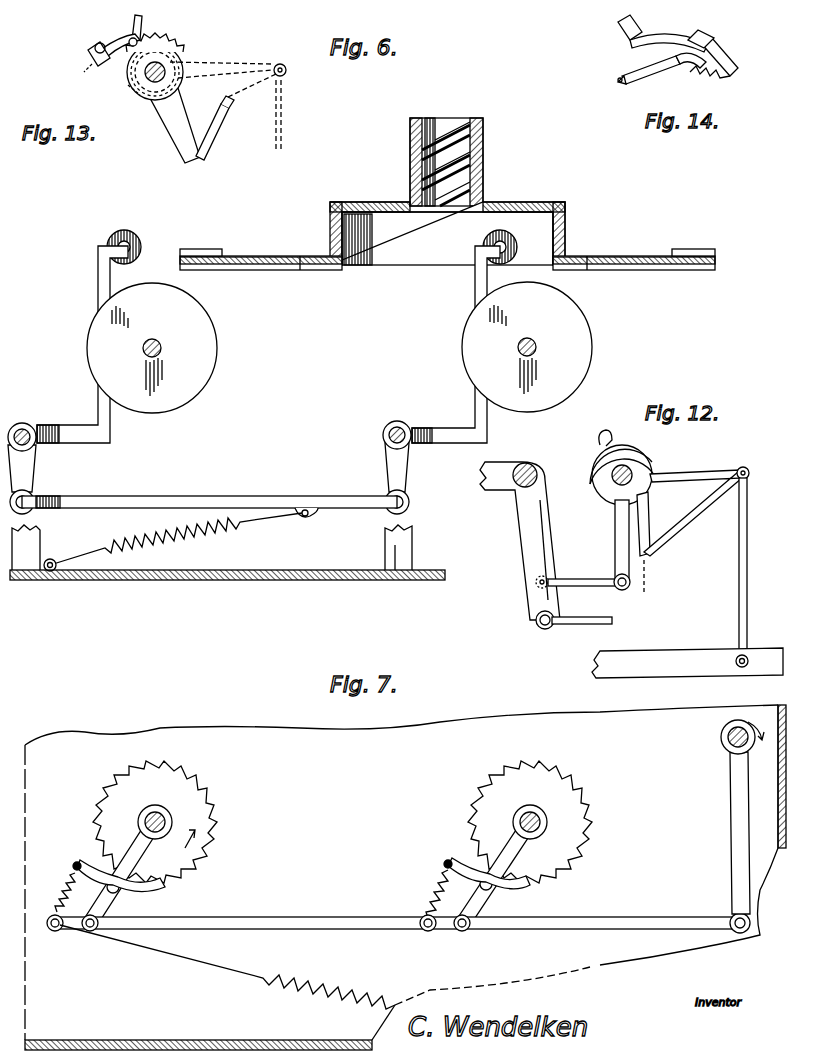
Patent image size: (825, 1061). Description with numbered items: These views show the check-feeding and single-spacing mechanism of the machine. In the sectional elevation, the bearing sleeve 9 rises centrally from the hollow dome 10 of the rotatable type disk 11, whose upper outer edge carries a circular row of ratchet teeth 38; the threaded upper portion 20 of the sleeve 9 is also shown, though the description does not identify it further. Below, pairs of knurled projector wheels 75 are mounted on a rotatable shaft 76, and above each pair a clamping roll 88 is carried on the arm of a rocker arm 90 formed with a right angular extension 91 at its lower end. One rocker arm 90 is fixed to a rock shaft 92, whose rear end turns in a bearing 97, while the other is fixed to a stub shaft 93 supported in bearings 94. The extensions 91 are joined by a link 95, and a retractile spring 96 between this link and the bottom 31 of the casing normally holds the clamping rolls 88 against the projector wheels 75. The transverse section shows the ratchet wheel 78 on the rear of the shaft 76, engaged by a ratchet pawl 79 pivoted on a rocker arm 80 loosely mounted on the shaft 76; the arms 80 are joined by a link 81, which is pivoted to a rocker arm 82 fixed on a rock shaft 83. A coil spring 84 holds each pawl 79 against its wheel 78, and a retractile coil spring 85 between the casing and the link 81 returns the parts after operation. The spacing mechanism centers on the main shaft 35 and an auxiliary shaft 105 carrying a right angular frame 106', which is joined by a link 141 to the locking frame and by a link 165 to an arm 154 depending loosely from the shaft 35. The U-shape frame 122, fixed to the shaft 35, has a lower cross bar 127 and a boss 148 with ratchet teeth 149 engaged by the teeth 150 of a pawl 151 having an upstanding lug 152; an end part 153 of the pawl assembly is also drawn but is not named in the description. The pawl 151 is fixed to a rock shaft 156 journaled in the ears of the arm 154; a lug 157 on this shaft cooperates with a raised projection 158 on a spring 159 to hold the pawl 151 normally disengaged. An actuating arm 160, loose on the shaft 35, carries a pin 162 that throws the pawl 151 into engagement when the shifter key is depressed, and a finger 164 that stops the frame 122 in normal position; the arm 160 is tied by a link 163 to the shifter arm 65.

In FIG. 6, the bearing sleeve 9 is at (484, 148).
In FIG. 6, the screw thread 20 is at (466, 120).
In FIG. 6, the hollow dome 10 is at (500, 202).
In FIG. 6, the rotatable type disk 11 is at (606, 256).
In FIG. 6, the ratchet teeth 38 is at (200, 249).
In FIG. 6, the clamping roll 88 is at (124, 232).
In FIG. 6, the rocker arm 90 is at (98, 280).
In FIG. 6, the right angular extension 91 is at (74, 443).
In FIG. 6, the projector wheels 75 is at (205, 372).
In FIG. 6, the rotatable shaft 76 is at (144, 350).
In FIG. 7, the rotatable shaft 76 is at (155, 805).
In FIG. 6, the rock shaft 92 is at (20, 425).
In FIG. 6, the stub shaft 93 is at (384, 432).
In FIG. 6, the link 95 is at (228, 496).
In FIG. 6, the retractile spring 96 is at (138, 548).
In FIG. 6, the bearing 97 is at (28, 565).
In FIG. 6, the bearings 94 is at (393, 553).
In FIG. 6, the bottom 31 is at (174, 580).
In FIG. 7, the bottom 31 is at (213, 1040).
In FIG. 7, the ratchet wheel 78 is at (210, 814).
In FIG. 7, the ratchet pawl 79 is at (106, 872).
In FIG. 7, the rocker arm 80 is at (160, 880).
In FIG. 7, the coil spring 84 is at (66, 882).
In FIG. 7, the link 81 is at (292, 917).
In FIG. 7, the rocker arm 82 is at (732, 830).
In FIG. 12, the rock shaft 83 is at (737, 674).
In FIG. 7, the rock shaft 83 is at (738, 720).
In FIG. 7, the retractile coil spring 85 is at (227, 967).
In FIG. 12, the auxiliary shaft 105 is at (525, 462).
In FIG. 12, the right angular frame 106' is at (509, 550).
In FIG. 12, the link 165 is at (590, 586).
In FIG. 12, the link 141 is at (585, 624).
In FIG. 12, the main shaft 35 is at (624, 463).
In FIG. 13, the main shaft 35 is at (168, 78).
In FIG. 12, the spring 159 is at (654, 458).
In FIG. 12, the raised projection 158 is at (607, 430).
In FIG. 12, the arm 154 is at (615, 548).
In FIG. 12, the U-shape frame 122 is at (645, 512).
In FIG. 12, the actuating finger 164 is at (696, 498).
In FIG. 13, the actuating finger 164 is at (229, 110).
In FIG. 12, the actuating arm 160 is at (730, 470).
In FIG. 13, the actuating arm 160 is at (228, 71).
In FIG. 12, the link 163 is at (747, 590).
In FIG. 13, the link 163 is at (282, 132).
In FIG. 12, the lower cross bar 127 is at (646, 584).
In FIG. 13, the lower cross bar 127 is at (183, 128).
In FIG. 12, the horizontally extending arm 65 is at (678, 658).
In FIG. 13, the boss 148 is at (128, 86).
In FIG. 13, the ratchet teeth 149 is at (180, 64).
In FIG. 13, the teeth 150 is at (183, 42).
In FIG. 14, the teeth 150 is at (712, 78).
In FIG. 14, the pawl 151 is at (718, 54).
In FIG. 13, the upstanding lug 152 is at (132, 22).
In FIG. 14, the upstanding lug 152 is at (696, 36).
In FIG. 13, the block 153 is at (88, 56).
In FIG. 14, the block 153 is at (620, 30).
In FIG. 14, the rock shaft 156 is at (668, 70).
In FIG. 13, the lug 157 is at (126, 56).
In FIG. 14, the lug 157 is at (630, 90).
In FIG. 13, the pin 162 is at (78, 77).